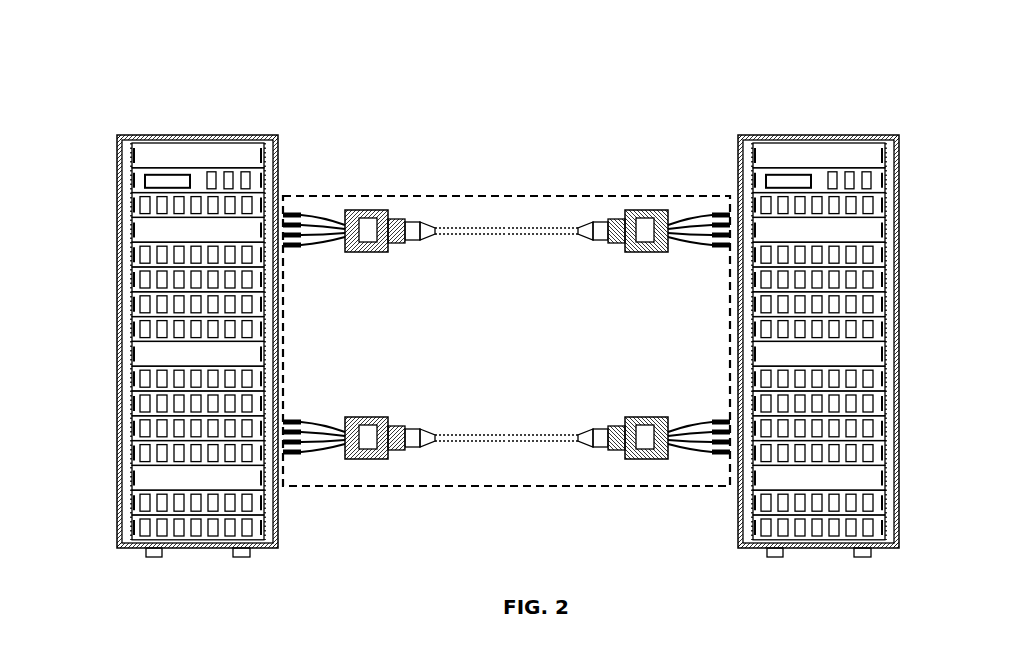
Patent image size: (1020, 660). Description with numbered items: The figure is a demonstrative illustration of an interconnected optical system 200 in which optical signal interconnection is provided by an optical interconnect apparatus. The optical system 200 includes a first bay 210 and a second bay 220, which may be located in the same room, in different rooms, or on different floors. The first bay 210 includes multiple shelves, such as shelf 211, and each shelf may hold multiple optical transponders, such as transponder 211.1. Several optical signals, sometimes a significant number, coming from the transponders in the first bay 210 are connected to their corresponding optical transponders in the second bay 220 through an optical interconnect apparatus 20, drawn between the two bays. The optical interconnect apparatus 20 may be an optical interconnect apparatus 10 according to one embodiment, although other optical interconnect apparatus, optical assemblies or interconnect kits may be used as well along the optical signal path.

The optical system 200 is at (372, 535).
The first bay 210 is at (206, 304).
The second bay 220 is at (818, 130).
The shelf 211 is at (267, 200).
The transponder 211.1 is at (157, 203).
The optical interconnect apparatus 20 is at (512, 180).
The optical interconnect apparatus 10 is at (473, 248).